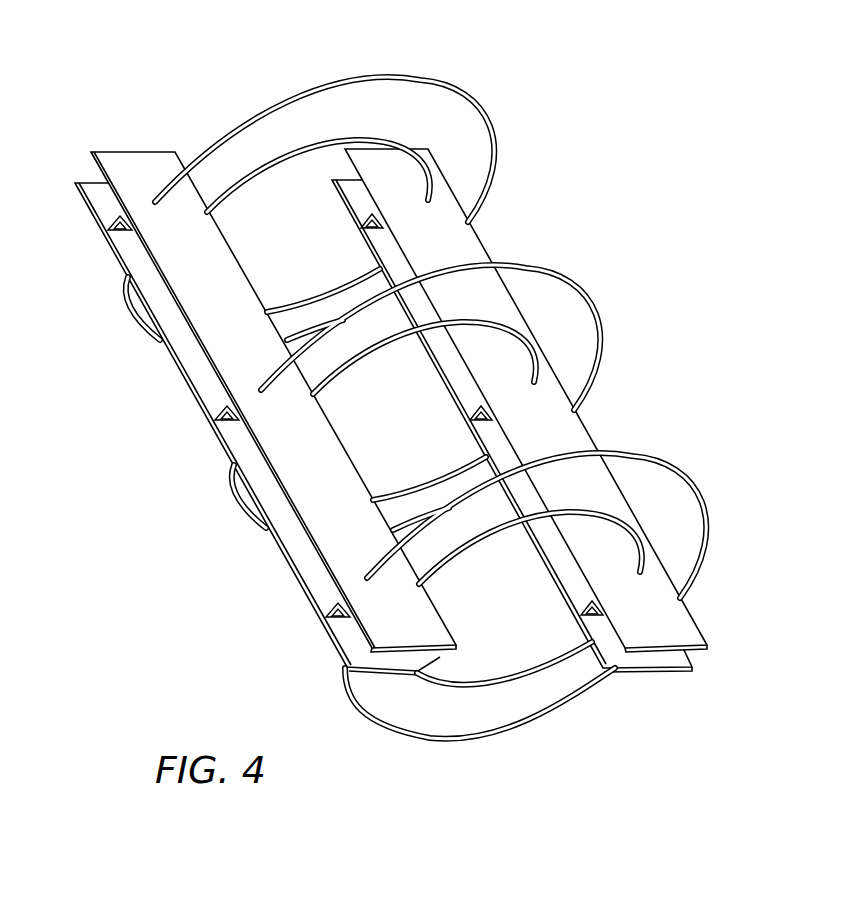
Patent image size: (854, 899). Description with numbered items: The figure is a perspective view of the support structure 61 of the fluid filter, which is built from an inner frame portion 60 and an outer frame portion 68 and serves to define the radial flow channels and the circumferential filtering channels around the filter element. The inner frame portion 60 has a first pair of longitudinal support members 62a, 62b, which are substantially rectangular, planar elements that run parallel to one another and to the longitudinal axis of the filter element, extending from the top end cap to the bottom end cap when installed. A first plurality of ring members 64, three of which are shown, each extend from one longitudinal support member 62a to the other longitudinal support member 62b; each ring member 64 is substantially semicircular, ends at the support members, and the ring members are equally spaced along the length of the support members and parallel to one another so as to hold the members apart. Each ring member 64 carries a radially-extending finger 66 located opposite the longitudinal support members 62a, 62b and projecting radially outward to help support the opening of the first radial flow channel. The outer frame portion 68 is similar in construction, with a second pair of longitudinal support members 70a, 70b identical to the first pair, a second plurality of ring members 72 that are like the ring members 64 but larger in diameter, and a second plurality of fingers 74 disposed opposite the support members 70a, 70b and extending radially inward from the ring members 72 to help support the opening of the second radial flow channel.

The inner frame portion 60 is at (704, 663).
The support structure 61 is at (486, 78).
The longitudinal support member 62a is at (694, 617).
The longitudinal support member 62b is at (672, 676).
The ring member 64 is at (317, 300).
The radially-extending finger 66 is at (112, 222).
The outer frame portion 68 is at (128, 150).
The longitudinal support member 70a is at (90, 213).
The longitudinal support member 70b is at (273, 368).
The ring member 72 is at (455, 85).
The radially-extending finger 74 is at (366, 222).